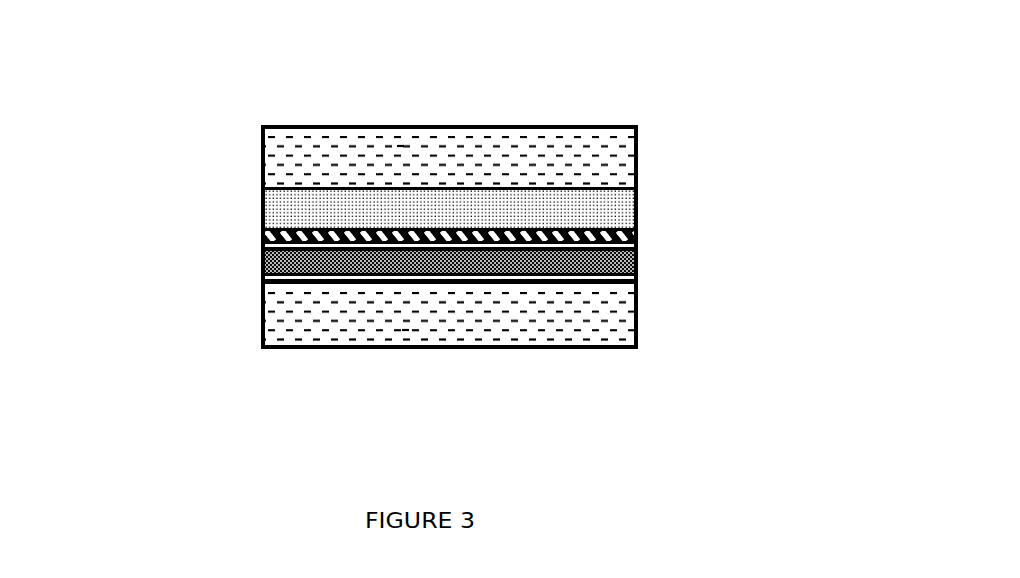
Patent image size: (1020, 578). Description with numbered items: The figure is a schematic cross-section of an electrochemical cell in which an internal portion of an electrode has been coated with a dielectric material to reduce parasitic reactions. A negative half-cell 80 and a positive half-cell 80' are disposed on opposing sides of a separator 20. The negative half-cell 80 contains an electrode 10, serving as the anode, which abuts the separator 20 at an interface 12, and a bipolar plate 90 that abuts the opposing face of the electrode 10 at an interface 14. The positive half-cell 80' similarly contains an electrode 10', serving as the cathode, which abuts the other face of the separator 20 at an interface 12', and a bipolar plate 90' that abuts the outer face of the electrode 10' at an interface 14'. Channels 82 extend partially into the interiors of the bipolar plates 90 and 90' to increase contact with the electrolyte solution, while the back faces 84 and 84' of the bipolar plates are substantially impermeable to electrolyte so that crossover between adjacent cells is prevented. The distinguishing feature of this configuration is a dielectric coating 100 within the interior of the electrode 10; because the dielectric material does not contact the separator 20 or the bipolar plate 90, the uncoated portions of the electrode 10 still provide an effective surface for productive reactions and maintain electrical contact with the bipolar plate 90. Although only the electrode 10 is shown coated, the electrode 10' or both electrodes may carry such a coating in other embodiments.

The dielectric coating 100 is at (260, 265).
The positive half-cell 80' is at (505, 164).
The negative half-cell 80 is at (513, 283).
The bipolar plate 90' is at (523, 136).
The bipolar plate 90 is at (520, 310).
The electrode 10' is at (523, 187).
The electrode 10 is at (520, 249).
The separator 20 is at (638, 237).
The interface 14' is at (389, 172).
The interface 14 is at (398, 300).
The interface 12' is at (389, 214).
The interface 12 is at (396, 259).
The channels 82 is at (400, 143).
The back face 84' is at (269, 93).
The back face 84 is at (586, 392).